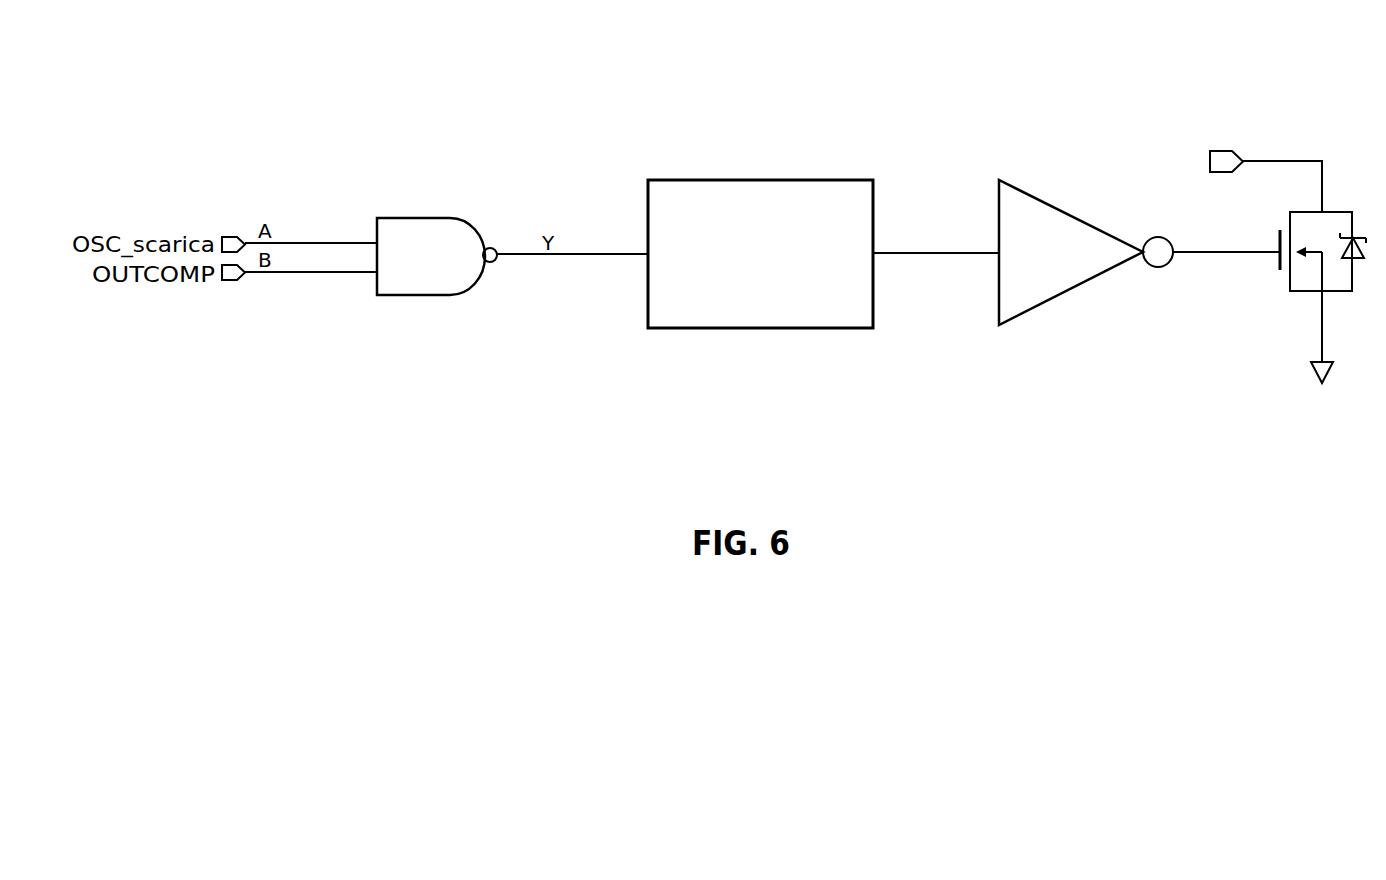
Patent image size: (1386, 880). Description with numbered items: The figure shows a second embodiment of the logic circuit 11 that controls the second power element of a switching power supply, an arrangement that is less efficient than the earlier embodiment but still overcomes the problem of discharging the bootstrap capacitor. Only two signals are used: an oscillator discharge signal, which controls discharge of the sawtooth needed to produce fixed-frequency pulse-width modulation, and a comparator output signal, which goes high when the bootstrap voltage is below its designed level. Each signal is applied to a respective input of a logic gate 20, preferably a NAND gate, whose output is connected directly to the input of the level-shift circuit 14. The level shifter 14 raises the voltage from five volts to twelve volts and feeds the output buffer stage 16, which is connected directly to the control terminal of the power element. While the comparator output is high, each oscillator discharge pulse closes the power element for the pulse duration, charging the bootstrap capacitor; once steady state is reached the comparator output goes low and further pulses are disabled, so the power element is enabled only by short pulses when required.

The logic circuit 11 is at (1238, 109).
The level-shift circuit 14 is at (800, 203).
The output buffer stage 16 is at (1073, 265).
The logic gate 20 is at (430, 278).